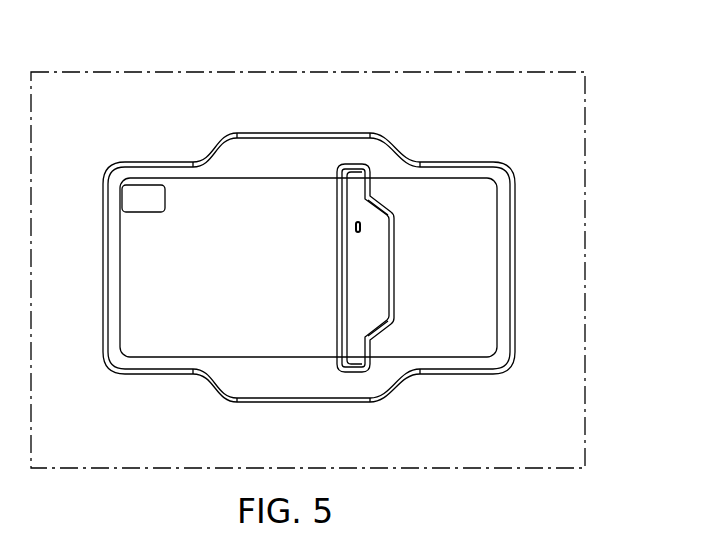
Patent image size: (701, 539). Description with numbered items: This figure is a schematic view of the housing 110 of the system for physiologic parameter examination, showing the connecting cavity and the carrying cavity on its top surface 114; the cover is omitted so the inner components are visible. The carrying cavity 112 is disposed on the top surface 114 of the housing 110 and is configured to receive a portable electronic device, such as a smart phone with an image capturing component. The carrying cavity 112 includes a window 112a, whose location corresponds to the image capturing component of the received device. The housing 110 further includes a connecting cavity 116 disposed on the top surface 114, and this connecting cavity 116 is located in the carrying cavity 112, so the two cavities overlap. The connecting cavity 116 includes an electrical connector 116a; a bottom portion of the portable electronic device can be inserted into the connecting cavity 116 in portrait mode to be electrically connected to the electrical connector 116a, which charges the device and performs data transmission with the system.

The housing 110 is at (563, 112).
The carrying cavity 112 is at (478, 239).
The window 112a is at (144, 194).
The top surface 114 is at (562, 400).
The connecting cavity 116 is at (354, 188).
The electrical connector 116a is at (364, 227).